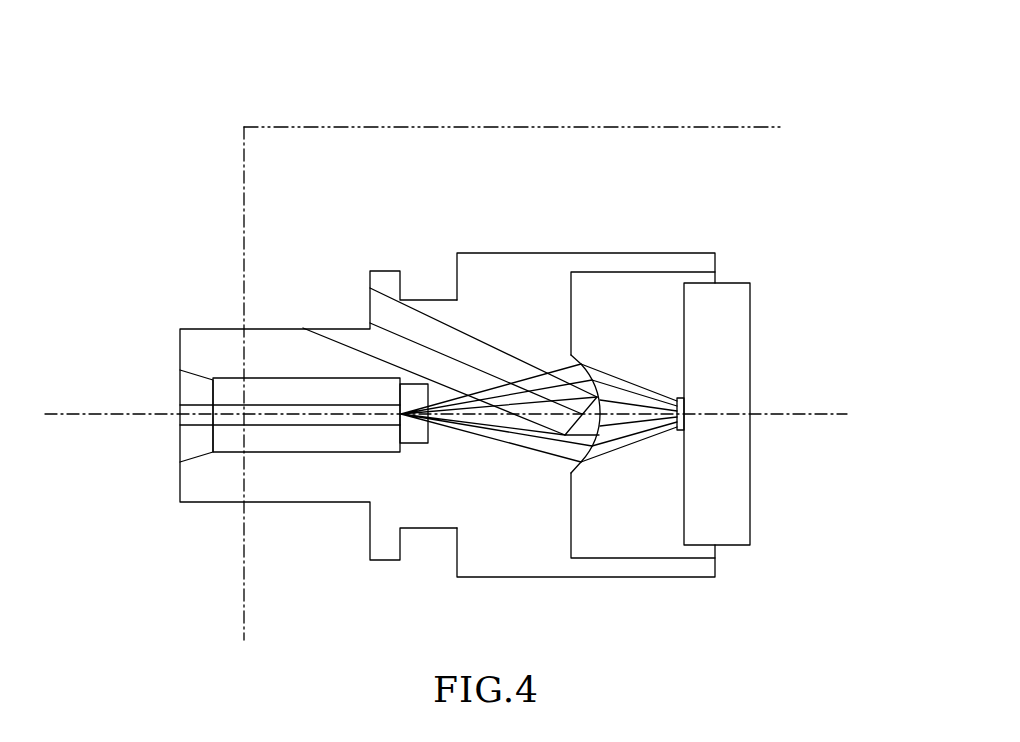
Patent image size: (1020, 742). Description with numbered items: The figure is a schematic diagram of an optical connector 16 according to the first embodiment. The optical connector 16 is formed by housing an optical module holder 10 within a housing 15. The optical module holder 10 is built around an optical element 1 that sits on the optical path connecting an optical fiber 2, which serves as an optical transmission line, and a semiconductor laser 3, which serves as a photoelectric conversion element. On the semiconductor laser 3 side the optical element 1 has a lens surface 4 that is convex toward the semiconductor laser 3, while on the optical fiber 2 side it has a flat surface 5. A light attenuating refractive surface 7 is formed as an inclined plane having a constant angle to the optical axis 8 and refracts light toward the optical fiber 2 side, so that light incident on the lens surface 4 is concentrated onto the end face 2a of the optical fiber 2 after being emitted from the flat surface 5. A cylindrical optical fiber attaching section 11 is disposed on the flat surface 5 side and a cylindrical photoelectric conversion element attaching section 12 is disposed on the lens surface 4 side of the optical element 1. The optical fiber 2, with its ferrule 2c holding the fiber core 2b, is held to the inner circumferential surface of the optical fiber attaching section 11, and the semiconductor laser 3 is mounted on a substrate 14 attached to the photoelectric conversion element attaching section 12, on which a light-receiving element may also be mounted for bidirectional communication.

The optical element 1 is at (520, 337).
The optical fiber 2 is at (280, 452).
The end face 2a is at (403, 427).
The fiber core 2b is at (367, 425).
The ferrule 2c is at (333, 452).
The semiconductor laser 3 is at (680, 393).
The lens surface 4 is at (596, 463).
The flat surface 5 is at (403, 403).
The light attenuating refractive surface 7 is at (608, 430).
The optical axis 8 is at (788, 416).
The optical module holder 10 is at (560, 252).
The optical fiber attaching section 11 is at (337, 329).
The photoelectric conversion element attaching section 12 is at (633, 252).
The substrate 14 is at (683, 322).
The housing 15 is at (243, 233).
The optical connector 16 is at (148, 132).